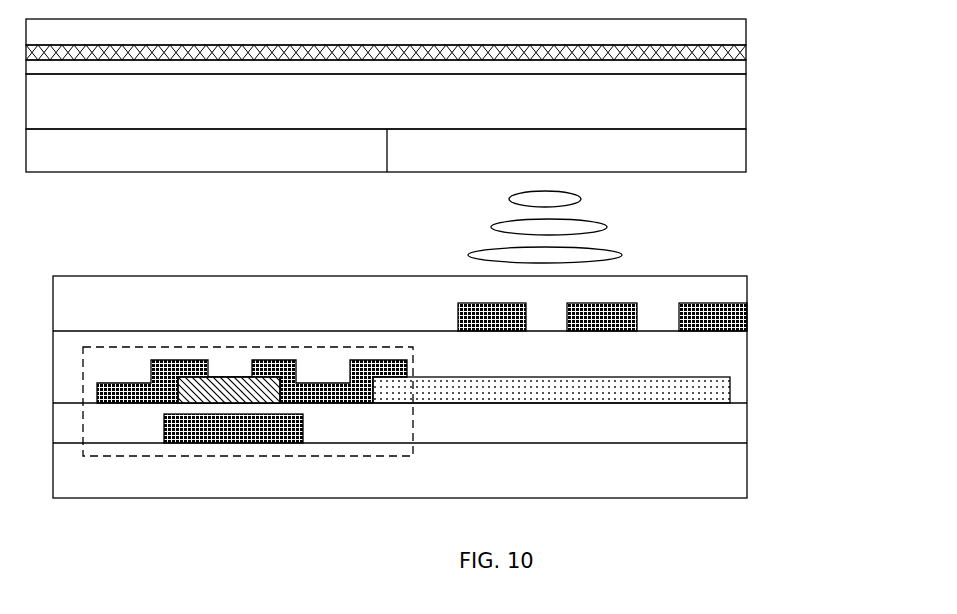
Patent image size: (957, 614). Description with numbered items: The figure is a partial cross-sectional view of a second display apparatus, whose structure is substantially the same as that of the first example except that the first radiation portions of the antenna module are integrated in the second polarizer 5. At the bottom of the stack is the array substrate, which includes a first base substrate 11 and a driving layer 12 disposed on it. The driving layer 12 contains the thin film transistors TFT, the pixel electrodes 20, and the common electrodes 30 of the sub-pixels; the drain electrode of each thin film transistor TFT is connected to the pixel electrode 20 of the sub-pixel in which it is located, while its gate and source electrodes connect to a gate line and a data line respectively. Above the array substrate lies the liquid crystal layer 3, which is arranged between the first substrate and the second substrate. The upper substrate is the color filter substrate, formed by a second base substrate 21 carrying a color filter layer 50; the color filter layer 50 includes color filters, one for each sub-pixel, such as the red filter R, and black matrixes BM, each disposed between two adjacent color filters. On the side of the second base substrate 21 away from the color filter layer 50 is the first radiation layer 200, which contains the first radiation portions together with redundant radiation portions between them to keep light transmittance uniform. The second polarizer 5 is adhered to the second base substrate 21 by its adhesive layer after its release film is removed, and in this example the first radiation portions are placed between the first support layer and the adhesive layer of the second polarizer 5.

The second polarizer 5 is at (725, 26).
The first radiation layer 200 is at (720, 53).
The second base substrate 21 is at (720, 91).
The color filter layer 50 is at (707, 150).
The liquid crystal layer 3 is at (642, 233).
The common electrodes 30 is at (713, 317).
The pixel electrodes 20 is at (690, 387).
The thin film transistor TFT is at (413, 428).
The first base substrate 11 is at (707, 470).
The driving layer 12 is at (854, 298).